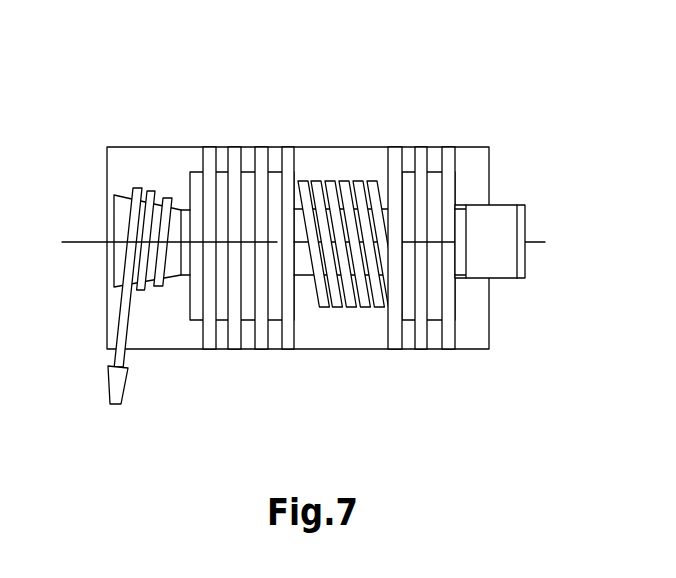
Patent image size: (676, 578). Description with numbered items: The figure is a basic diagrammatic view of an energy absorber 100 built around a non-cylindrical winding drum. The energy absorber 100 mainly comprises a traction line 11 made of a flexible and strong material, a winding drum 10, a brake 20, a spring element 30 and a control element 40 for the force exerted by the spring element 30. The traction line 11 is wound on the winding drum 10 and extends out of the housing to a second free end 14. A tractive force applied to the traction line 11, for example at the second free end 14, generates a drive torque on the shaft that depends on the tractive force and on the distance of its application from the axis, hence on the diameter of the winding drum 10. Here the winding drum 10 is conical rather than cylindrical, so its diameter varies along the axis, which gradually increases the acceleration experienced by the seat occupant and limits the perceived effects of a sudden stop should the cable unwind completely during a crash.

The energy absorber 100 is at (423, 125).
The winding drum 10 is at (123, 207).
The traction line 11 is at (122, 314).
The second free end 14 is at (117, 383).
The brake 20 is at (249, 330).
The spring element 30 is at (342, 320).
The control element 40 is at (518, 283).